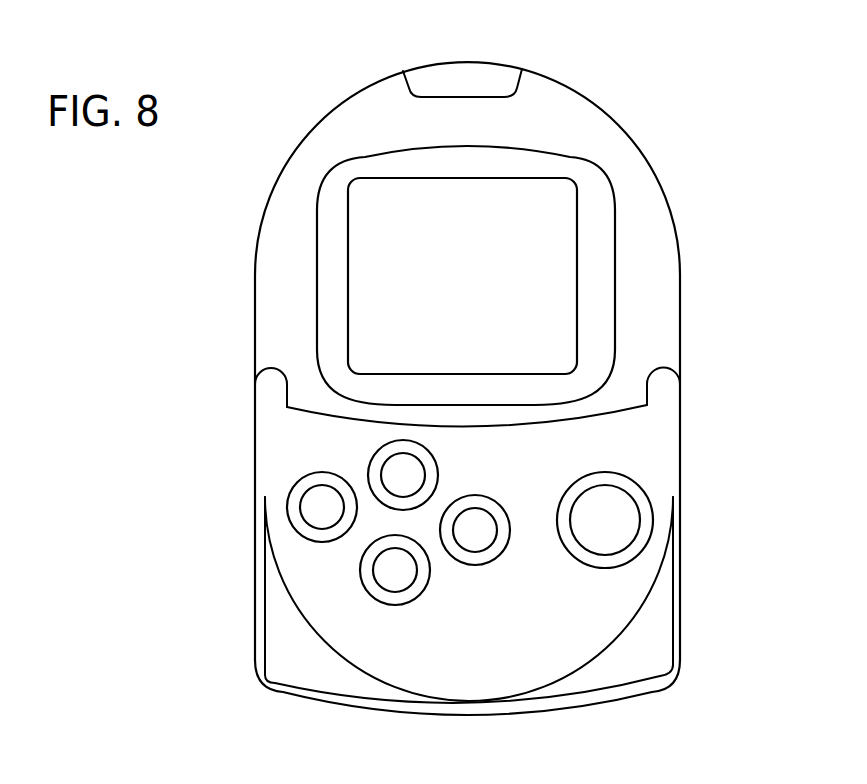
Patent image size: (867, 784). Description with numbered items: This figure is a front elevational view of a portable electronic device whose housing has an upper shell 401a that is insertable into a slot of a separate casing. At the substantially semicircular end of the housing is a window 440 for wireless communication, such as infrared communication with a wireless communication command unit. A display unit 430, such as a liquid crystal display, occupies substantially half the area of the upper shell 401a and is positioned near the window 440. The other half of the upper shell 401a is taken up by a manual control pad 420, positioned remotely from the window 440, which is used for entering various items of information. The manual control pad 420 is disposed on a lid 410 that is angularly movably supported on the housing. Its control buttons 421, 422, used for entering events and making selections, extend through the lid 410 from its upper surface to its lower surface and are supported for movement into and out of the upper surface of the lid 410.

The upper shell 401a is at (648, 250).
The window 440 is at (463, 82).
The display unit 430 is at (403, 202).
The lid 410 is at (660, 468).
The manual control pad 420 is at (530, 650).
The control buttons 421 is at (319, 500).
The control button 422 is at (590, 538).